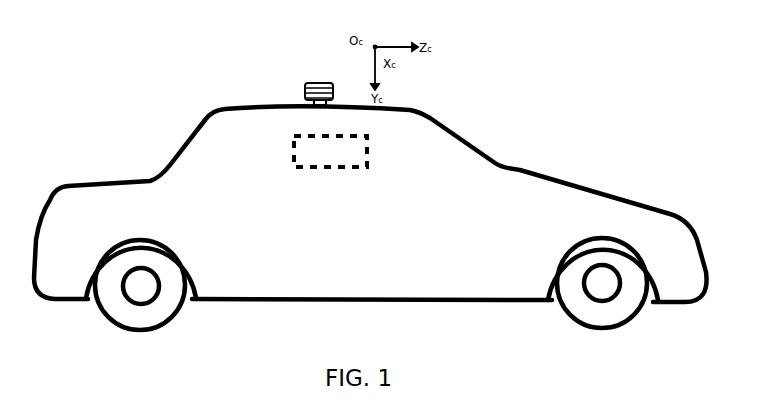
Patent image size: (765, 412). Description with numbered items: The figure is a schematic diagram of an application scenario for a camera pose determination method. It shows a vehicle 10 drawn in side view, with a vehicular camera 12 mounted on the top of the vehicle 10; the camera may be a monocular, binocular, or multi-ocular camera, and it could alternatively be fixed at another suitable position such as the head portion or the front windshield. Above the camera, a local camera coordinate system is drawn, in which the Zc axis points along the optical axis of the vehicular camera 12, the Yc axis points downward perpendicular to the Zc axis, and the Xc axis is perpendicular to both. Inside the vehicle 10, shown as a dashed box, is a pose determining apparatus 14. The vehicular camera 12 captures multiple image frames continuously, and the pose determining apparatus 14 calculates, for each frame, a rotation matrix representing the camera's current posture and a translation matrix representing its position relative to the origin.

The vehicle 10 is at (509, 30).
The vehicular camera 12 is at (305, 93).
The pose determining apparatus 14 is at (330, 151).